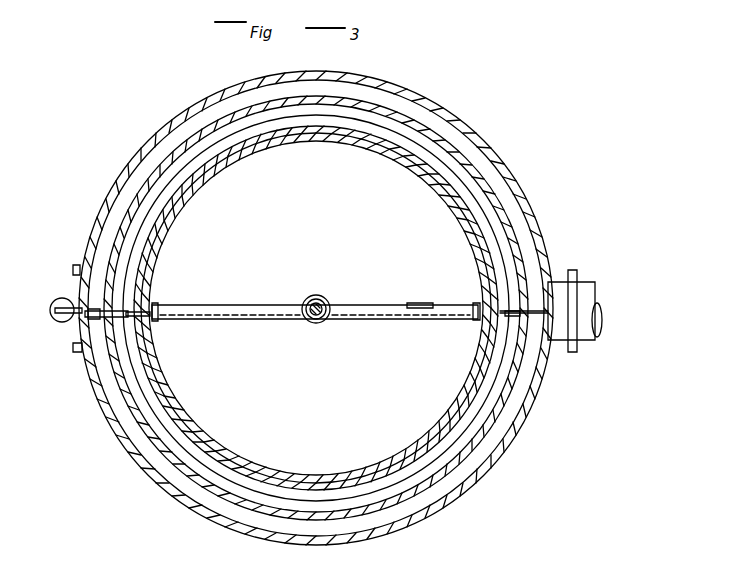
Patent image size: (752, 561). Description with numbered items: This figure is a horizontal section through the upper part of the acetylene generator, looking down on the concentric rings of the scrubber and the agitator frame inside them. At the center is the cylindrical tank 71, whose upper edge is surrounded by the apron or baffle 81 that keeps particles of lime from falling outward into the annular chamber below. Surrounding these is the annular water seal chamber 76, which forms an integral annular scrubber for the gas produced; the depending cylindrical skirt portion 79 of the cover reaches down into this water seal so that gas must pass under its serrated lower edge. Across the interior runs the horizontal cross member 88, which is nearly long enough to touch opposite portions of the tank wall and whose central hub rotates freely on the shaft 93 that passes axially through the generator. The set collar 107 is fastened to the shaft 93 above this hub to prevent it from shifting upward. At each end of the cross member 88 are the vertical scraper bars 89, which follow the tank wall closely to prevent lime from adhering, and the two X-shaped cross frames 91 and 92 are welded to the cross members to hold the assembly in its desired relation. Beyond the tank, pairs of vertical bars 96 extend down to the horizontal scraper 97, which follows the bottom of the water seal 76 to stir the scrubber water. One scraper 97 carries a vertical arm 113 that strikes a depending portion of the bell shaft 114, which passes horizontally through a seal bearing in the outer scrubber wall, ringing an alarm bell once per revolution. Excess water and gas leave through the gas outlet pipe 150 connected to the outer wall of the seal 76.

The tank 71 is at (150, 275).
The annular water seal chamber 76 is at (535, 400).
The cylindrical skirt portion 79 is at (520, 377).
The apron or baffle 81 is at (143, 238).
The horizontal cross member 88 is at (368, 305).
The vertical scraper bars 89 is at (160, 305).
The X-shaped cross frame 91 is at (258, 319).
The X-shaped cross frame 92 is at (387, 319).
The shaft 93 is at (320, 295).
The vertical bars 96 is at (113, 318).
The horizontal scraper 97 is at (535, 305).
The set collar 107 is at (305, 300).
The vertical arm 113 is at (78, 320).
The bell shaft 114 is at (58, 303).
The gas outlet pipe 150 is at (598, 305).